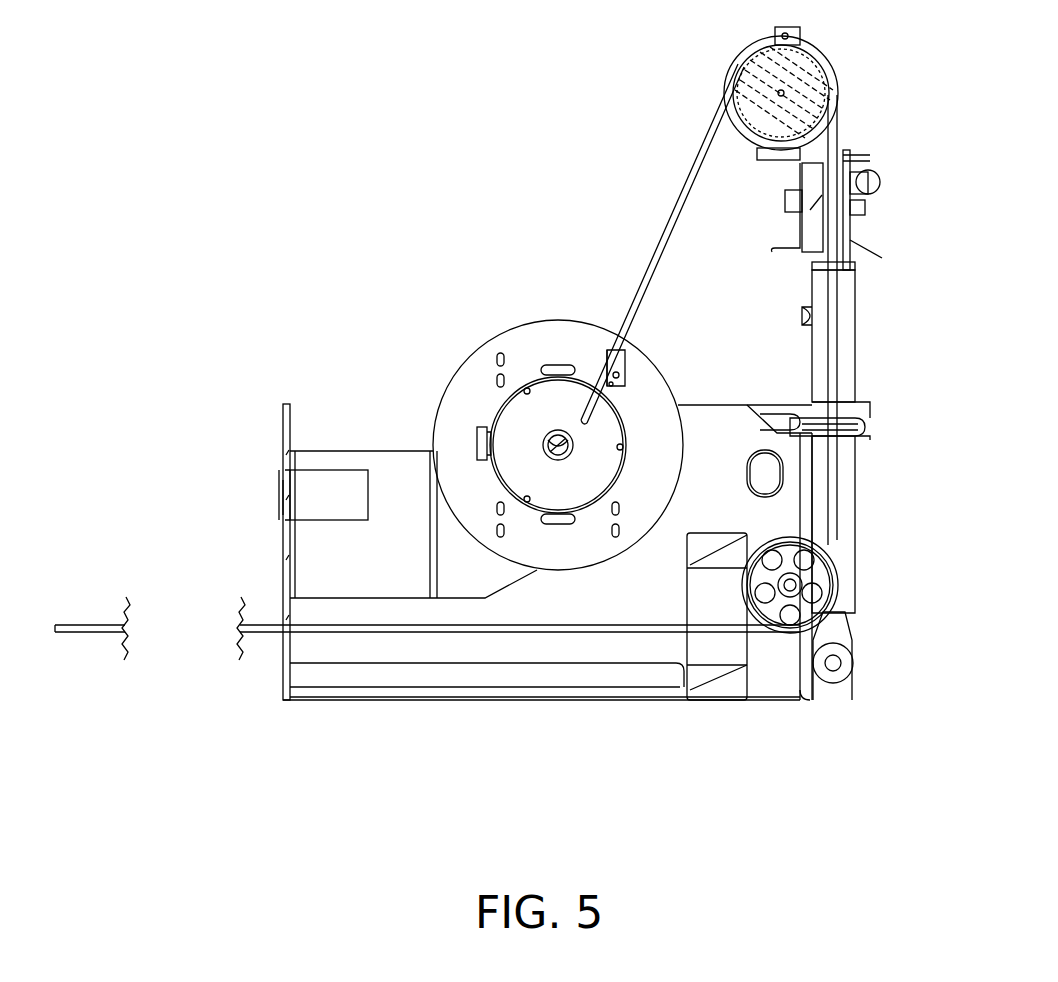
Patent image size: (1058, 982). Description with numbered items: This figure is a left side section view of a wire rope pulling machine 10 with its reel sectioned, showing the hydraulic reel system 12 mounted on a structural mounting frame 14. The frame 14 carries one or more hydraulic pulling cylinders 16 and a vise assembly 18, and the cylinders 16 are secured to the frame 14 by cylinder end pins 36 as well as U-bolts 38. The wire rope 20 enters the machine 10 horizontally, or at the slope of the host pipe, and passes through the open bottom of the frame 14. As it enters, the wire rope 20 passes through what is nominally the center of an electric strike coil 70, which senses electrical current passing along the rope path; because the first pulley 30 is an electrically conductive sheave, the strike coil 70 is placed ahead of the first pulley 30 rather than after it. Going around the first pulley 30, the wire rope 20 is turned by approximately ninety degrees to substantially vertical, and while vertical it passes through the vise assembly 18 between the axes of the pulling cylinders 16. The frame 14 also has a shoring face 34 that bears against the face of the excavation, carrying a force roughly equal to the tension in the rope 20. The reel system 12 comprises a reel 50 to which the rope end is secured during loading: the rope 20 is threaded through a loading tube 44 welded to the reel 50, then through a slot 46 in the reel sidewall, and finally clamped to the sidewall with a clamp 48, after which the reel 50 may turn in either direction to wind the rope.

The wire rope pulling machine 10 is at (422, 104).
The hydraulic reel system 12 is at (425, 316).
The structural mounting frame 14 is at (855, 485).
The hydraulic pulling cylinders 16 is at (848, 312).
The vise assembly 18 is at (850, 232).
The wire rope 20 is at (78, 625).
The first pulley 30 is at (806, 586).
The shoring face 34 is at (283, 432).
The cylinder end pins 36 is at (835, 665).
The U-bolts 38 is at (848, 648).
The loading tube 44 is at (482, 443).
The slot 46 is at (545, 366).
The clamp 48 is at (626, 370).
The reel 50 is at (571, 320).
The electric strike coil 70 is at (718, 688).